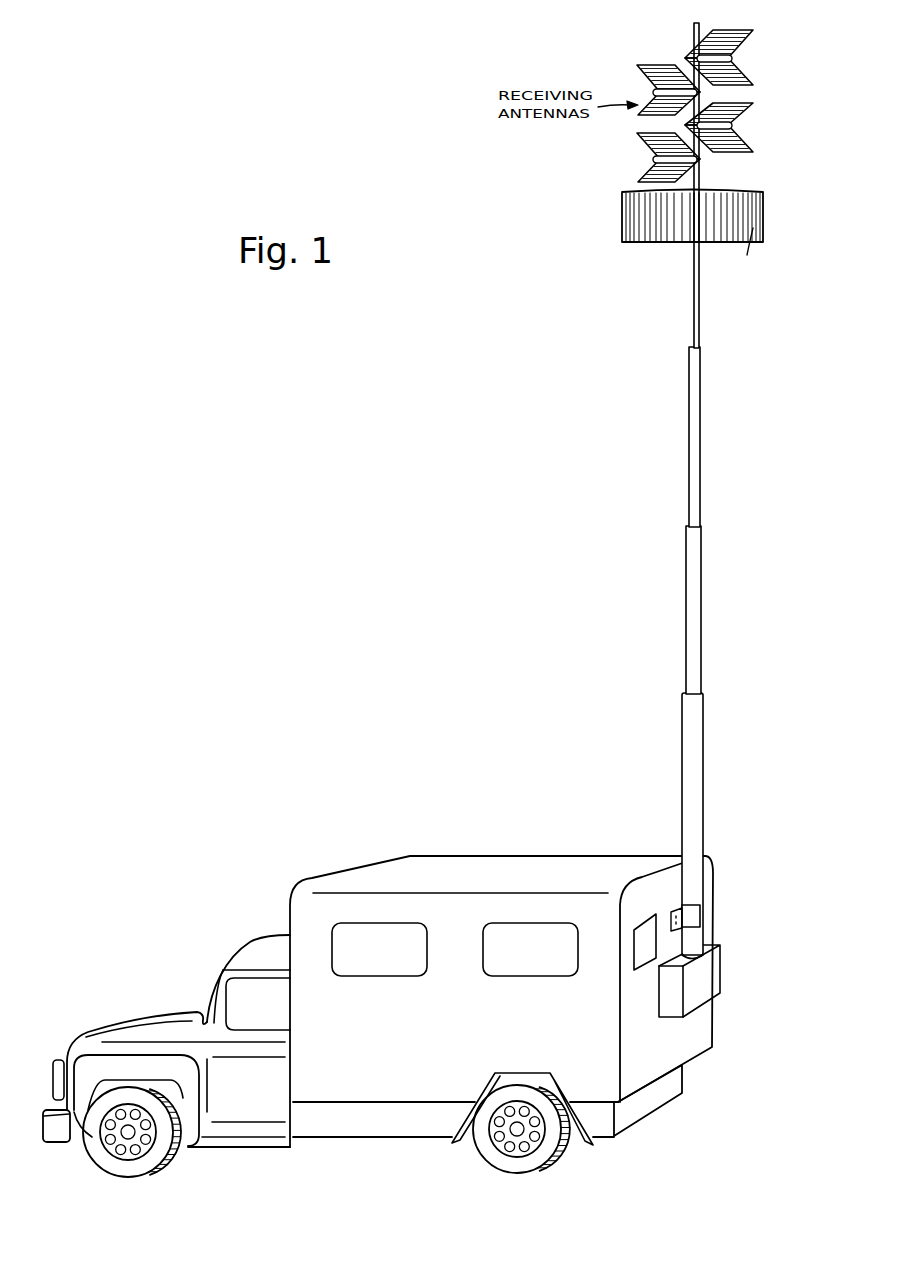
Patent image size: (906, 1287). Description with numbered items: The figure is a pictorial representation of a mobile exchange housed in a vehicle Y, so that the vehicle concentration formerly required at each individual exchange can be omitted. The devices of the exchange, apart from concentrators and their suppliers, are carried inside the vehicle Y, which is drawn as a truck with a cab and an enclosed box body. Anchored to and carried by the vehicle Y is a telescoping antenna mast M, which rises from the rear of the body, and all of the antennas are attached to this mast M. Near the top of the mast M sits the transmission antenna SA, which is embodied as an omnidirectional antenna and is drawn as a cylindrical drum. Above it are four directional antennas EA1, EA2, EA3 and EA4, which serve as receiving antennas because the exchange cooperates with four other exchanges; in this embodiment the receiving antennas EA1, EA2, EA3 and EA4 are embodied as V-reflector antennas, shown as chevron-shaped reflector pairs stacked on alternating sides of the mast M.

The directional antenna EA1 is at (640, 68).
The directional antenna EA2 is at (643, 138).
The directional antenna EA3 is at (737, 150).
The directional antenna EA4 is at (743, 28).
The transmission antenna SA is at (627, 241).
The mast M is at (700, 580).
The vehicle Y is at (505, 836).